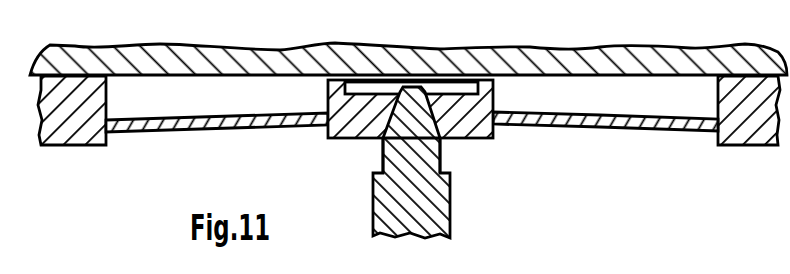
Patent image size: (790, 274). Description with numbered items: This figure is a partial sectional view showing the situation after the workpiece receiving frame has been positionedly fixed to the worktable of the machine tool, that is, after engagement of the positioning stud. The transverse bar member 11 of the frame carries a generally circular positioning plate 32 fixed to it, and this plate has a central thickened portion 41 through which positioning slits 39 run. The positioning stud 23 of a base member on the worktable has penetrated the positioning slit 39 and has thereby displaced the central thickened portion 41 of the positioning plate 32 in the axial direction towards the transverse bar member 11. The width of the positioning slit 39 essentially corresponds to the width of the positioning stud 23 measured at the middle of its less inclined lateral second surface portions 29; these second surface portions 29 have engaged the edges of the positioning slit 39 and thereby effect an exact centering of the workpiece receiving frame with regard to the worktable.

The transverse bar member 11 is at (637, 54).
The positioning stud 23 is at (428, 210).
The less inclined second surface portions 29 is at (381, 138).
The positioning plate 32 is at (662, 138).
The positioning slit 39 is at (440, 105).
The central thickened portion 41 is at (398, 96).